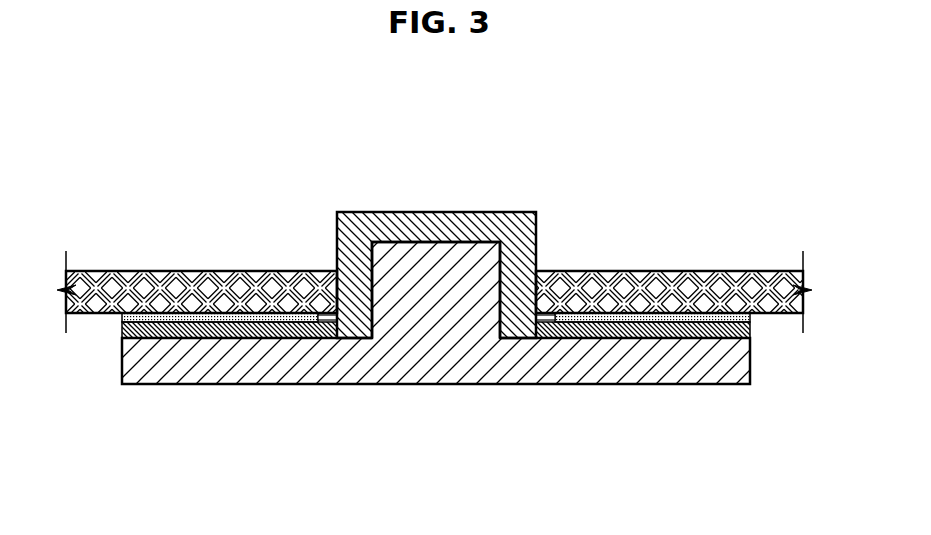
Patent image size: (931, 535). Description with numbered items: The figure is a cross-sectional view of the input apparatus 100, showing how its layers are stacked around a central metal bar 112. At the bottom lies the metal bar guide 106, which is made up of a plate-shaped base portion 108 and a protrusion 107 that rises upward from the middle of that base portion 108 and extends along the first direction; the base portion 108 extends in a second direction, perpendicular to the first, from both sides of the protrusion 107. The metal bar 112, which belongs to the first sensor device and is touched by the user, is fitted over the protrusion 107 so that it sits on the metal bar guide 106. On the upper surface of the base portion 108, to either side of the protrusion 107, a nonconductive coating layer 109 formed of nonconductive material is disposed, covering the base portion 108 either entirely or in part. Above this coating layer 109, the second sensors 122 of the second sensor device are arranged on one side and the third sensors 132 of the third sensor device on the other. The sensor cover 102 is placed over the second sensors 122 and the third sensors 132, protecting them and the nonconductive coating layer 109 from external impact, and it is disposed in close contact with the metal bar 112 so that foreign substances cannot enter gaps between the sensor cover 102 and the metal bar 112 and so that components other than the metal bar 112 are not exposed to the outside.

The input apparatus 100 is at (241, 174).
The sensor cover 102 is at (681, 283).
The metal bar guide 106 is at (436, 361).
The protrusion 107 is at (436, 339).
The base portion 108 is at (605, 372).
The nonconductive coating layer 109 is at (750, 330).
The metal bar 112 is at (427, 221).
The second sensor 122 is at (258, 313).
The third sensor 132 is at (612, 313).